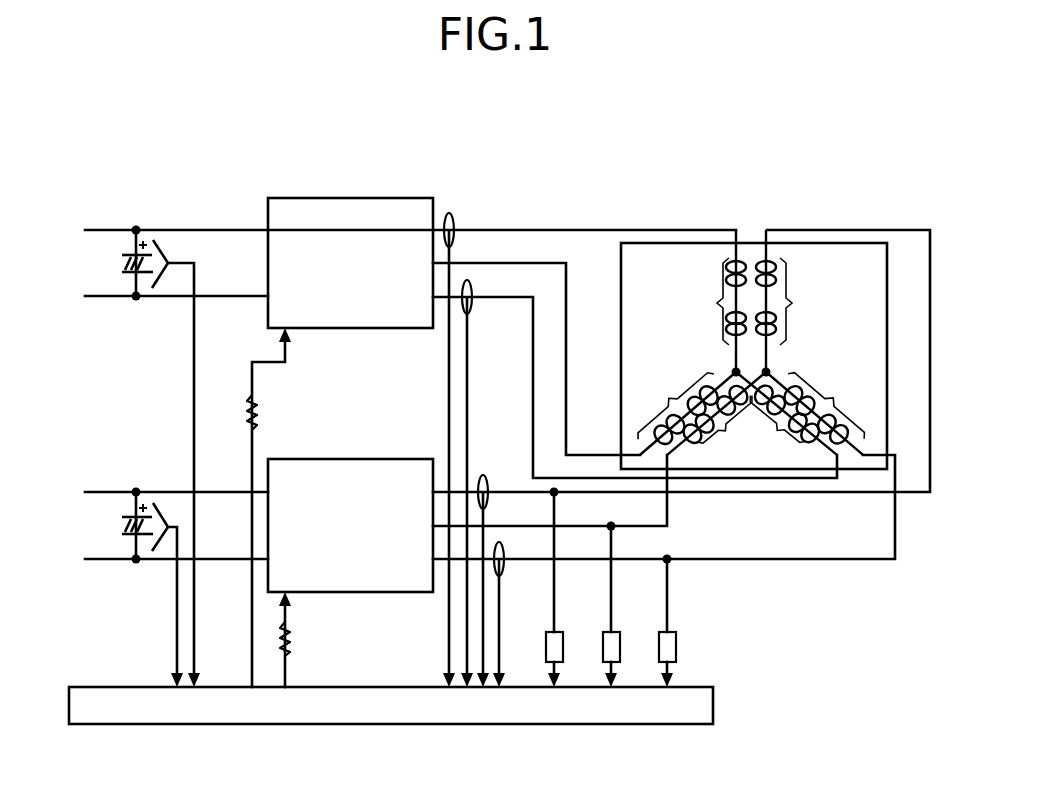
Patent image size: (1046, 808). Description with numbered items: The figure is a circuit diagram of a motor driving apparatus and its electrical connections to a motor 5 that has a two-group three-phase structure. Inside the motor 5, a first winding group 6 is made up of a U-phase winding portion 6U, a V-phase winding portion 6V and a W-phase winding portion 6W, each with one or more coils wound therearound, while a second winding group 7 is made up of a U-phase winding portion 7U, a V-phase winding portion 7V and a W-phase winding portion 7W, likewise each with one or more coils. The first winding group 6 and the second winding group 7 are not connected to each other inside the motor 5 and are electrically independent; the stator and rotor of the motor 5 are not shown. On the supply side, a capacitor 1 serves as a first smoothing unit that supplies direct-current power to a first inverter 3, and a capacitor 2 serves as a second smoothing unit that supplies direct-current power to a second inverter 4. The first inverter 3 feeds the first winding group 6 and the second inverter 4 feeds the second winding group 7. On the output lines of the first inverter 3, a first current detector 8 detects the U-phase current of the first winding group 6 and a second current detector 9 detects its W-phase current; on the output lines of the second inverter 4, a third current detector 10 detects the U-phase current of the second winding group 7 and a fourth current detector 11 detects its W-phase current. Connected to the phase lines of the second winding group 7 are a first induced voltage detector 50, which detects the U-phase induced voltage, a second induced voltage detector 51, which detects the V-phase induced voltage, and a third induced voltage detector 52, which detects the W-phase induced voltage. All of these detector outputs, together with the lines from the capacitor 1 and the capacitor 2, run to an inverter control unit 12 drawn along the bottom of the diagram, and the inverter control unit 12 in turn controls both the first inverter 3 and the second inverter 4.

The capacitor 1 is at (128, 278).
The capacitor 2 is at (128, 541).
The first inverter 3 is at (318, 198).
The second inverter 4 is at (335, 459).
The motor 5 is at (746, 243).
The first winding group 6 is at (688, 274).
The second winding group 7 is at (817, 272).
The U-phase winding portion 6U is at (709, 301).
The V-phase winding portion 6V is at (683, 408).
The W-phase winding portion 6W is at (777, 436).
The U-phase winding portion 7U is at (794, 301).
The V-phase winding portion 7V is at (725, 436).
The W-phase winding portion 7W is at (819, 408).
The first current detector 8 is at (455, 218).
The second current detector 9 is at (469, 313).
The third current detector 10 is at (485, 474).
The fourth current detector 11 is at (502, 575).
The inverter control unit 12 is at (650, 725).
The first induced voltage detector 50 is at (557, 632).
The second induced voltage detector 51 is at (614, 632).
The third induced voltage detector 52 is at (670, 632).